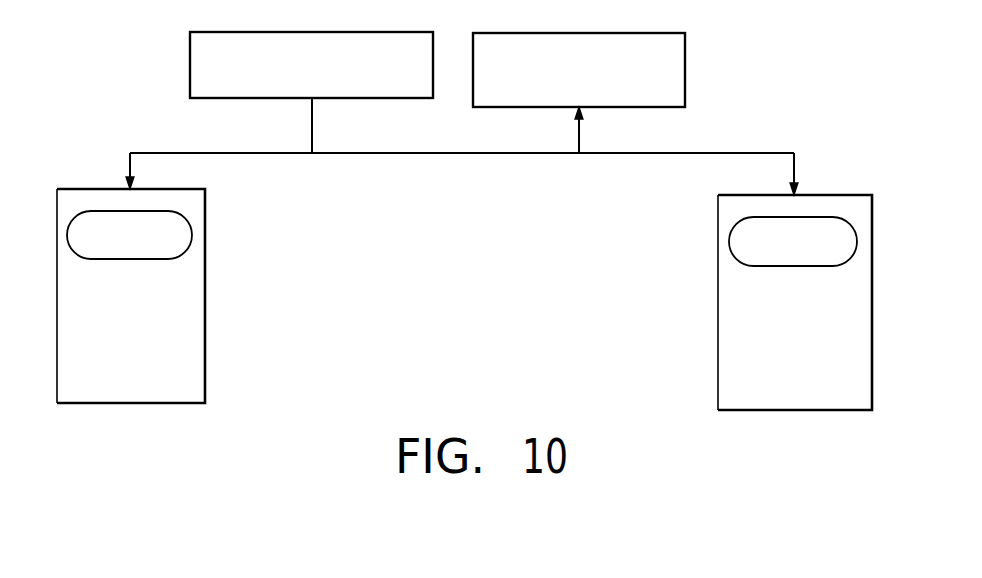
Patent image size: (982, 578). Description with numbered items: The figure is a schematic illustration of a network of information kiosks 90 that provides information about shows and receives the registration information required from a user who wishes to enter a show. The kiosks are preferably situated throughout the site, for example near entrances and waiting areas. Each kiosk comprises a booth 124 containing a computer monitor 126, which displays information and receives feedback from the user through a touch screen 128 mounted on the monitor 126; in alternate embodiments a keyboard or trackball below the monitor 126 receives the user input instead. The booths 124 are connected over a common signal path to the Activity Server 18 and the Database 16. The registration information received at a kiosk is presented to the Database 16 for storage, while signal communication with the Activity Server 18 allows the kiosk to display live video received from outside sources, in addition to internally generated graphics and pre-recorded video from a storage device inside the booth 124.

The network of information kiosks 90 is at (743, 107).
The Activity Server 18 is at (190, 60).
The Database 16 is at (513, 33).
The booth 124 is at (90, 187).
The computer monitor 126 is at (175, 230).
The touch screen 128 is at (172, 250).